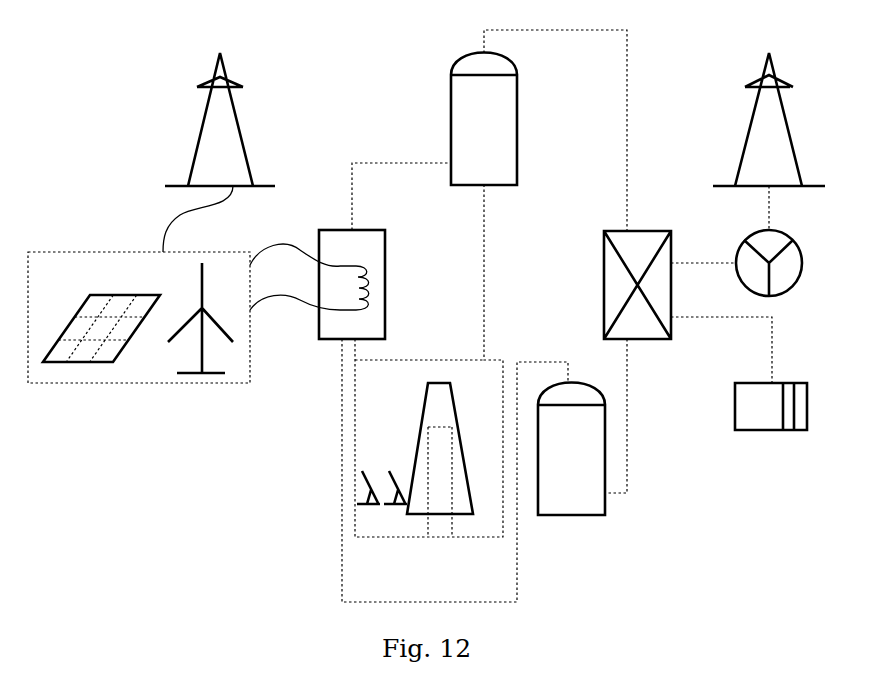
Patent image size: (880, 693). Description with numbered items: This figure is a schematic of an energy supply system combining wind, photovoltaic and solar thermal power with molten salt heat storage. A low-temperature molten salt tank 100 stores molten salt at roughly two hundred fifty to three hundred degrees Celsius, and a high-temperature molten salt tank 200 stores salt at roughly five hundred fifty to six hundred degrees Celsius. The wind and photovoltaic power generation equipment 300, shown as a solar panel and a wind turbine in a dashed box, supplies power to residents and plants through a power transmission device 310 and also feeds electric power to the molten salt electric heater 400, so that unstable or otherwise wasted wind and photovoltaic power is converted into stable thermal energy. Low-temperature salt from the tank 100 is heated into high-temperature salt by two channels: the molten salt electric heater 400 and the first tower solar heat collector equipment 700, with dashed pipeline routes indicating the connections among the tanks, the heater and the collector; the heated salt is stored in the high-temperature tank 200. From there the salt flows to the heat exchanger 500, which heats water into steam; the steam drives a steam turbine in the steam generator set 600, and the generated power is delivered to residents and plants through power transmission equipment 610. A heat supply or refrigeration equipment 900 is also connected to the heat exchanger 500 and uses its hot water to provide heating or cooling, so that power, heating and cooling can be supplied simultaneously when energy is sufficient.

The low-temperature molten salt tank 100 is at (572, 495).
The high-temperature molten salt tank 200 is at (473, 110).
The wind and photovoltaic power generation equipment 300 is at (138, 375).
The power transmission device 310 is at (232, 140).
The molten salt electric heater 400 is at (370, 280).
The heat exchanger 500 is at (650, 330).
The steam generator set 600 is at (780, 273).
The power transmission equipment 610 is at (772, 140).
The first tower solar heat collector equipment 700 is at (435, 518).
The heat supply or refrigeration equipment 900 is at (765, 413).